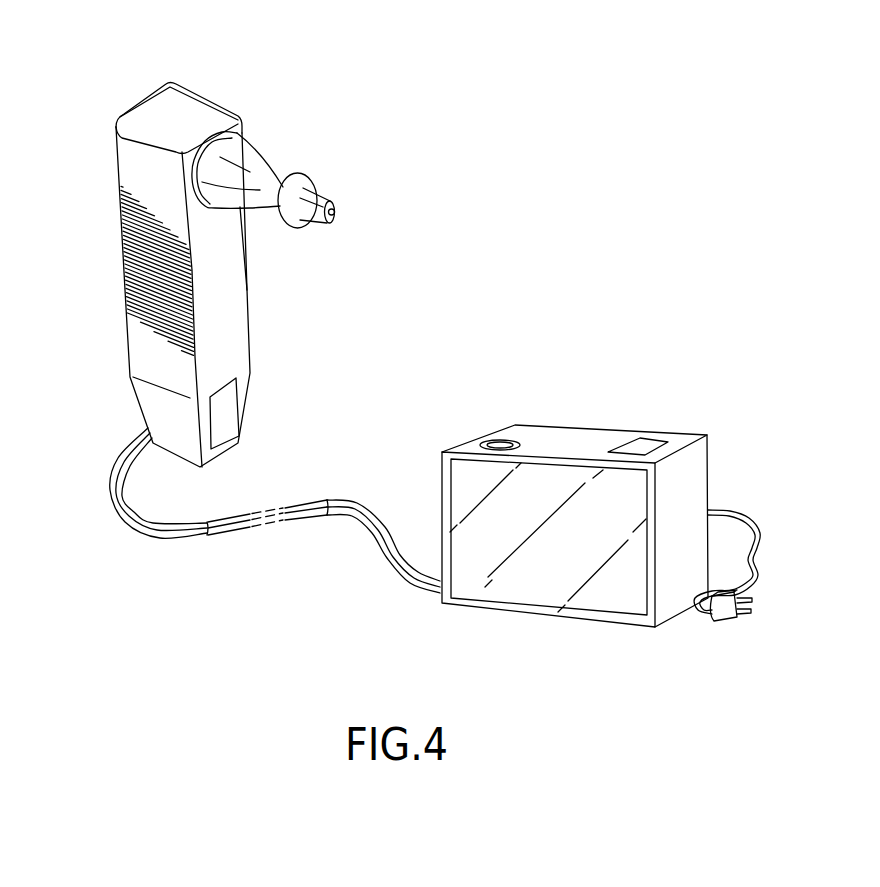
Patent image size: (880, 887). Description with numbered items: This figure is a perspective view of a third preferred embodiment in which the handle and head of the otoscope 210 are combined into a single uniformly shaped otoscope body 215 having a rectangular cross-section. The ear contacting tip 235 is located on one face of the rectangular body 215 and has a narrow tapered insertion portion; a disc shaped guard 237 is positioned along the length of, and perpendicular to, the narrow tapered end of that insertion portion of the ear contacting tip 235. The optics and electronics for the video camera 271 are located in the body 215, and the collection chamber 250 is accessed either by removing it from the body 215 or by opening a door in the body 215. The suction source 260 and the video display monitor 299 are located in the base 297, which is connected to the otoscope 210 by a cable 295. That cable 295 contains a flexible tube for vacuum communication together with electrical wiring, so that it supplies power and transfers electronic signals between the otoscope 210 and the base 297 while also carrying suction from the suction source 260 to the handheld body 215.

The otoscope 210 is at (308, 133).
The otoscope body 215 is at (144, 290).
The ear contacting tip 235 is at (327, 190).
The disc shaped guard 237 is at (295, 224).
The collection chamber 250 is at (201, 108).
The suction source 260 is at (648, 446).
The video camera 271 is at (498, 443).
The cable 295 is at (363, 499).
The base 297 is at (563, 420).
The video display monitor 299 is at (530, 577).